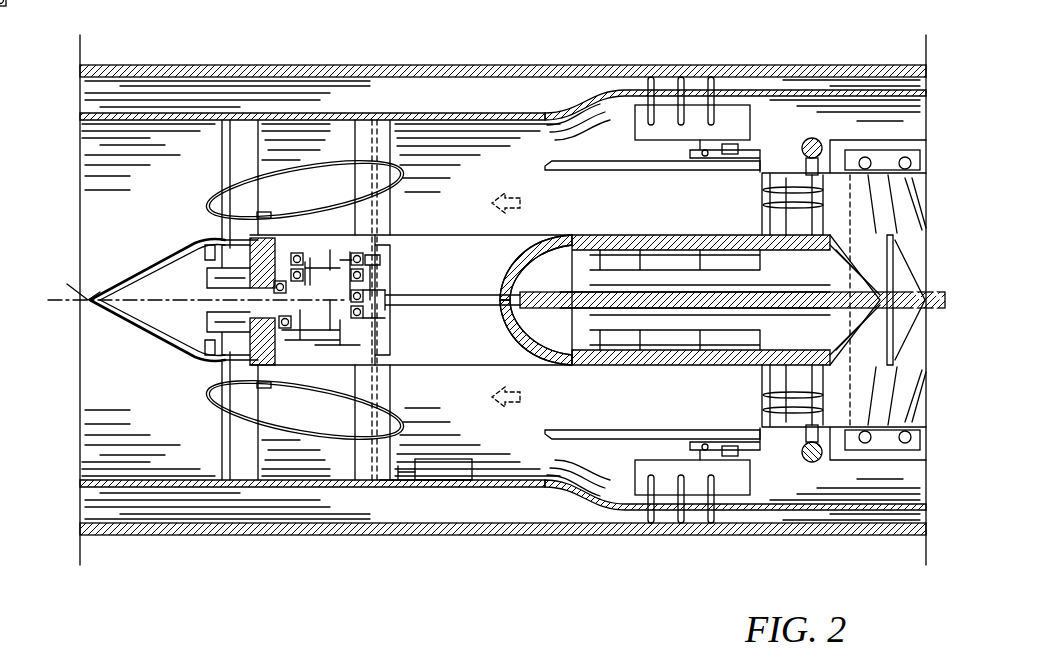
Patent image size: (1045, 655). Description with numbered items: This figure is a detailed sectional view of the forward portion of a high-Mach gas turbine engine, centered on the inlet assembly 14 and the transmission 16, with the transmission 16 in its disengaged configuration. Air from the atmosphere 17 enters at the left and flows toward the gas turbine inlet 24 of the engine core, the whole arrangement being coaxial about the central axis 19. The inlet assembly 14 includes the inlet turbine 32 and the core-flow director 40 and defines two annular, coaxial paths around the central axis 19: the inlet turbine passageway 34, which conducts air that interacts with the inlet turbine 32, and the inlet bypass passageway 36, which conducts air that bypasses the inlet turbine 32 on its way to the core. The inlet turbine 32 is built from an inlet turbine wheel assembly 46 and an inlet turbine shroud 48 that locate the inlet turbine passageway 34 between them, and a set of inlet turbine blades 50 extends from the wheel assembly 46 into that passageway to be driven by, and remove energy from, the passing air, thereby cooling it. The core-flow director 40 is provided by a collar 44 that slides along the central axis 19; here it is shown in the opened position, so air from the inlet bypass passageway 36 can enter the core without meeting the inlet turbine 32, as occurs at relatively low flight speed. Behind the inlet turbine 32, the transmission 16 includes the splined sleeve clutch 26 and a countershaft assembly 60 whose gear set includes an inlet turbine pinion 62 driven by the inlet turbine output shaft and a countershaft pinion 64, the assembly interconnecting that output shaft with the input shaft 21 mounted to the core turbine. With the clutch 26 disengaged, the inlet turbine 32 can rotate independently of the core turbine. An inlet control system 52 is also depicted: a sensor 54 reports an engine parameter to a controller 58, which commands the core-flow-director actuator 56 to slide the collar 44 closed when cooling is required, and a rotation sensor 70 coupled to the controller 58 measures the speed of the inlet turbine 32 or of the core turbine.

The inlet assembly 14 is at (287, 212).
The transmission 16 is at (328, 320).
The atmosphere 17 is at (75, 218).
The central axis 19 is at (60, 300).
The input shaft 21 is at (422, 290).
The gas turbine inlet 24 is at (643, 195).
The clutch 26 is at (378, 292).
The inlet turbine 32 is at (250, 335).
The inlet turbine passageway 34 is at (321, 214).
The inlet bypass passageway 36 is at (293, 145).
The core-flow director 40 is at (622, 448).
The collar 44 is at (562, 441).
The inlet turbine wheel assembly 46 is at (230, 248).
The inlet turbine shroud 48 is at (348, 262).
The inlet turbine blades 50 is at (255, 245).
The inlet control system 52 is at (352, 618).
The sensor 54 is at (398, 472).
The core-flow-director actuator 56 is at (728, 146).
The controller 58 is at (438, 473).
The countershaft assembly 60 is at (330, 252).
The inlet turbine pinion 62 is at (298, 330).
The countershaft pinion 64 is at (398, 255).
The rotation sensor 70 is at (222, 333).